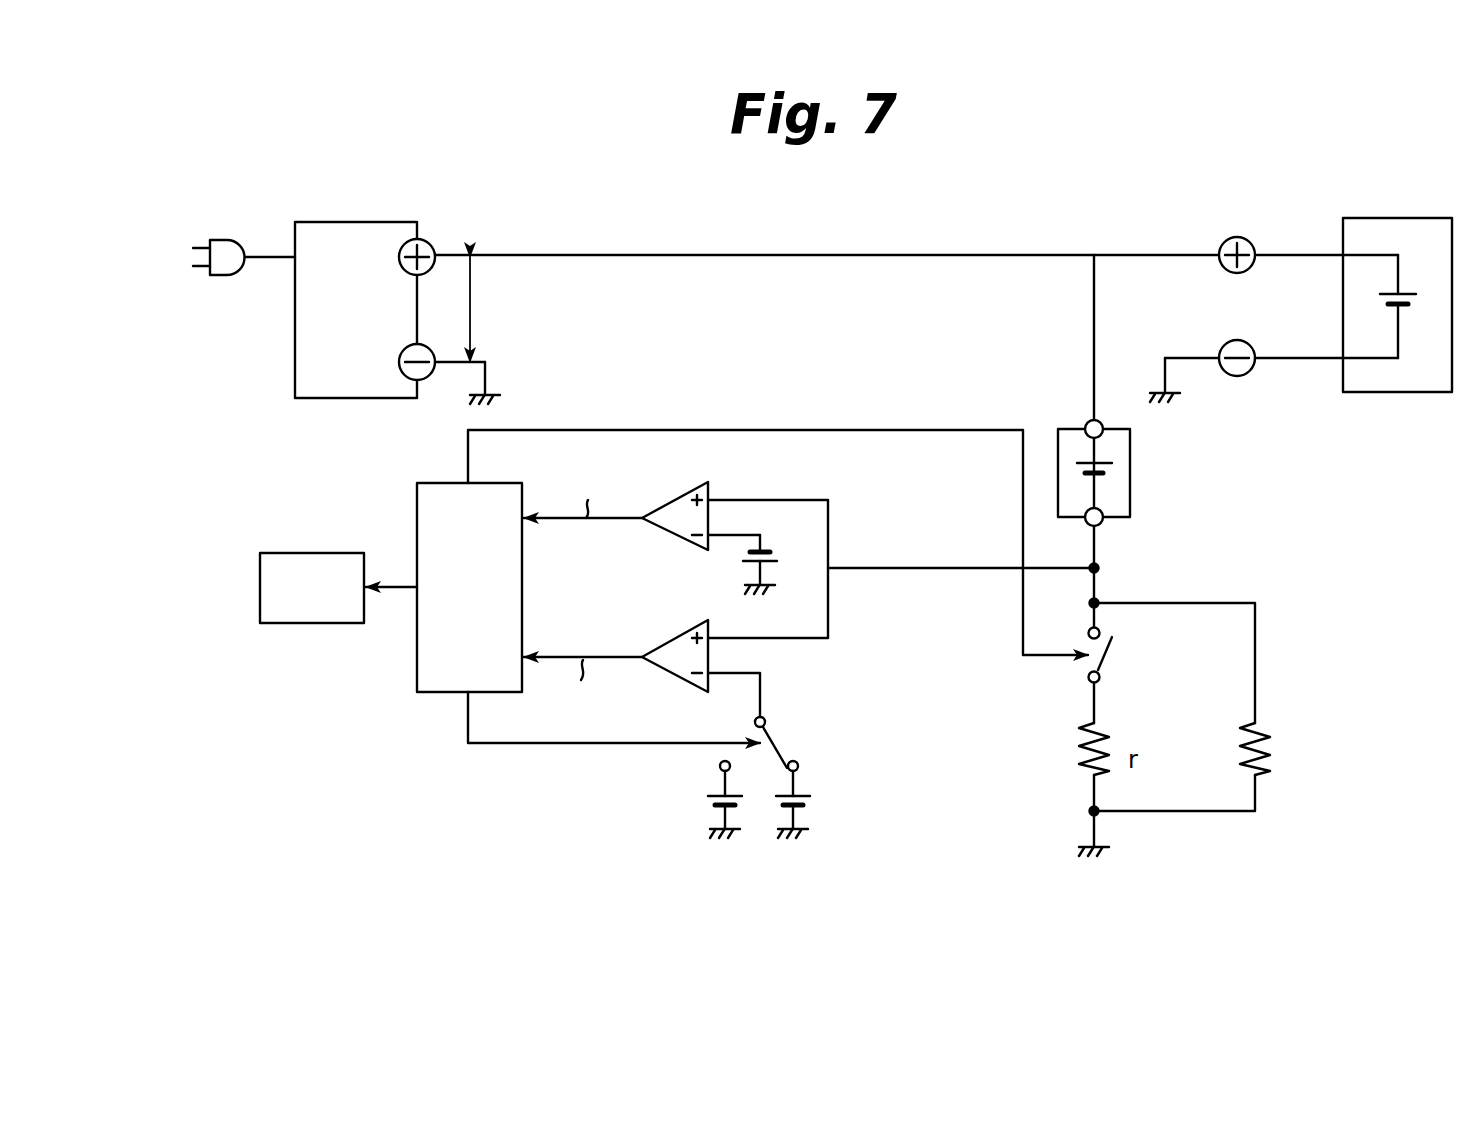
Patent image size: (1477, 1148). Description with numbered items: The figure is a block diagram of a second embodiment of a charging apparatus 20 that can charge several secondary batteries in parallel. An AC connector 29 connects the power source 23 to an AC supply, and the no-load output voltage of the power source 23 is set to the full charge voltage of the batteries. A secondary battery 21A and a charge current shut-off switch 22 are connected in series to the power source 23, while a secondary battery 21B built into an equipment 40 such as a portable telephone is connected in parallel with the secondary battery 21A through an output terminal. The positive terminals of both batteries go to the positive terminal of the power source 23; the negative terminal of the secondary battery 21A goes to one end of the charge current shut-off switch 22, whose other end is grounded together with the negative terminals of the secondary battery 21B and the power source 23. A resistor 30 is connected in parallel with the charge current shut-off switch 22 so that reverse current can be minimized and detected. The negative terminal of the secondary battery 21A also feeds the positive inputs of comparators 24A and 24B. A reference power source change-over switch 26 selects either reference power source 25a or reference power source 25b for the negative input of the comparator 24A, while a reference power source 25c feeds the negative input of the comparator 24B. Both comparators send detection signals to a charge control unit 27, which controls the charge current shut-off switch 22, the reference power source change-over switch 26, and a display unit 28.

The charging apparatus 20 is at (825, 222).
The secondary battery 21A is at (1131, 470).
The secondary battery 21B is at (1382, 300).
The charge current shut-off switch 22 is at (1087, 666).
The power source 23 is at (353, 222).
The comparator 24A is at (716, 657).
The comparator 24B is at (716, 490).
The reference power source 25a is at (712, 813).
The reference power source 25b is at (780, 806).
The reference power source 25c is at (742, 553).
The reference power source change-over switch 26 is at (790, 742).
The charge control unit 27 is at (417, 520).
The display unit 28 is at (260, 586).
The AC connector 29 is at (219, 240).
The resistor 30 is at (1262, 725).
The equipment 40 is at (1399, 218).